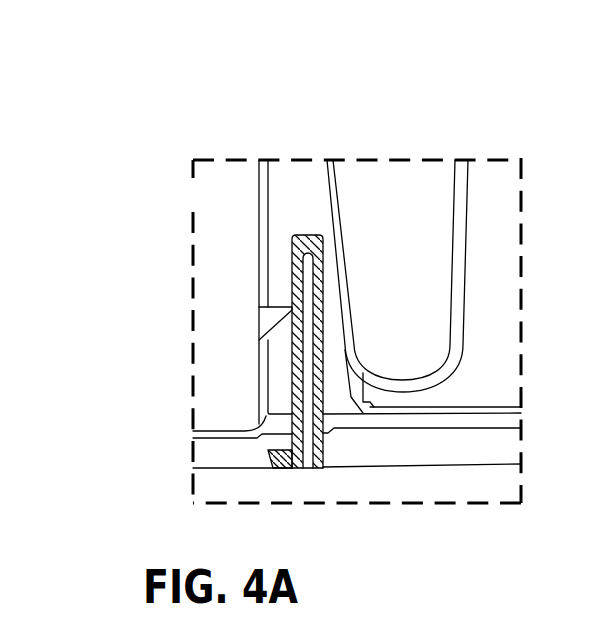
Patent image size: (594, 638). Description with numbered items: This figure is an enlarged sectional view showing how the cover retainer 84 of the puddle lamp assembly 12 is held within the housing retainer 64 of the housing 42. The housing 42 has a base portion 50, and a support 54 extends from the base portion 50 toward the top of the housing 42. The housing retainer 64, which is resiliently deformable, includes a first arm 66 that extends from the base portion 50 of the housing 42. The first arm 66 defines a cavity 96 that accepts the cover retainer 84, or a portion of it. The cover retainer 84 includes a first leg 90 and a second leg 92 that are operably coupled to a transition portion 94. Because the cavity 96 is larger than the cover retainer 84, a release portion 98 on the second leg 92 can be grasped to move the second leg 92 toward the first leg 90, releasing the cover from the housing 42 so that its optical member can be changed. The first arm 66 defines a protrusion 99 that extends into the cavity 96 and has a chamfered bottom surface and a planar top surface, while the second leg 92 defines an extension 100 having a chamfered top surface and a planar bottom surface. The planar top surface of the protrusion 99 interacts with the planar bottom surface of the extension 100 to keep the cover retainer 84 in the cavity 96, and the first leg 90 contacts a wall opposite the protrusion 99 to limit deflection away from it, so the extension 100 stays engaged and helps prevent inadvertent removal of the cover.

The puddle lamp assembly 12 is at (471, 146).
The housing 42 is at (505, 365).
The base portion 50 is at (463, 450).
The support 54 is at (495, 208).
The housing retainer 64 is at (253, 171).
The first arm 66 is at (306, 183).
The cover retainer 84 is at (290, 353).
The first leg 90 is at (318, 322).
The second leg 92 is at (297, 388).
The transition portion 94 is at (309, 240).
The cavity 96 is at (288, 218).
The release portion 98 is at (281, 472).
The protrusion 99 is at (272, 317).
The extension 100 is at (288, 297).